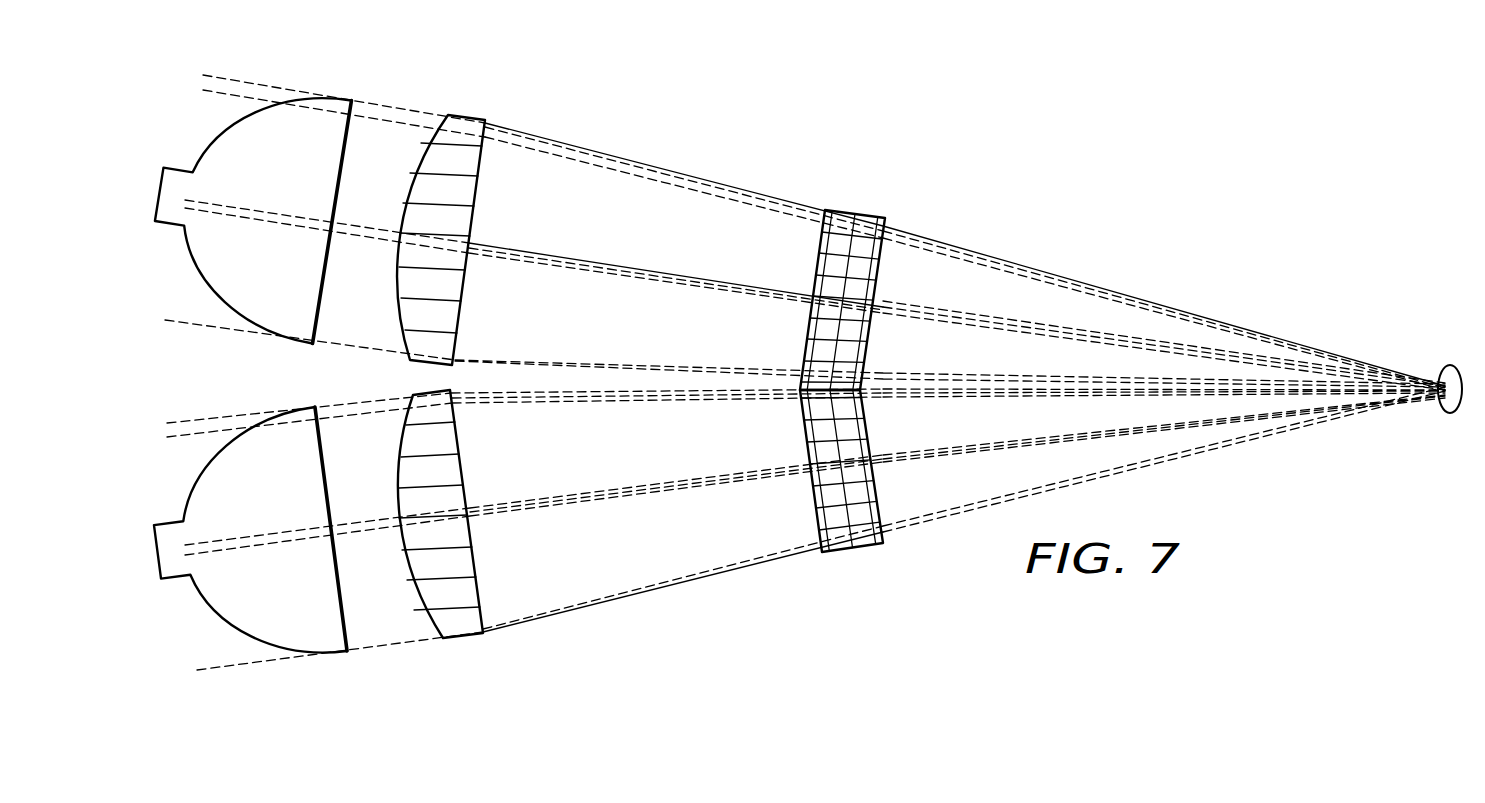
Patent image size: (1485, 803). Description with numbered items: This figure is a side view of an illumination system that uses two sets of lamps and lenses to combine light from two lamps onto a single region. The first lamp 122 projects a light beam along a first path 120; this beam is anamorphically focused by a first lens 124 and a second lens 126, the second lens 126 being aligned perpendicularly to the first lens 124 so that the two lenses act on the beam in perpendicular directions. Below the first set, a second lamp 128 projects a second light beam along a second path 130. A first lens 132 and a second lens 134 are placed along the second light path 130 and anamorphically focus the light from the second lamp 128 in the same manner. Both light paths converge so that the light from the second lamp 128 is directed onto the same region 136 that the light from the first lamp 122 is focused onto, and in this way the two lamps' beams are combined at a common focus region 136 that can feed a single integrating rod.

The first path 120 is at (597, 269).
The first lamp 122 is at (305, 123).
The first lens 124 is at (463, 127).
The second lens 126 is at (855, 212).
The second lamp 128 is at (320, 637).
The second path 130 is at (607, 502).
The first lens 132 is at (462, 627).
The second lens 134 is at (857, 552).
The region 136 is at (1445, 365).